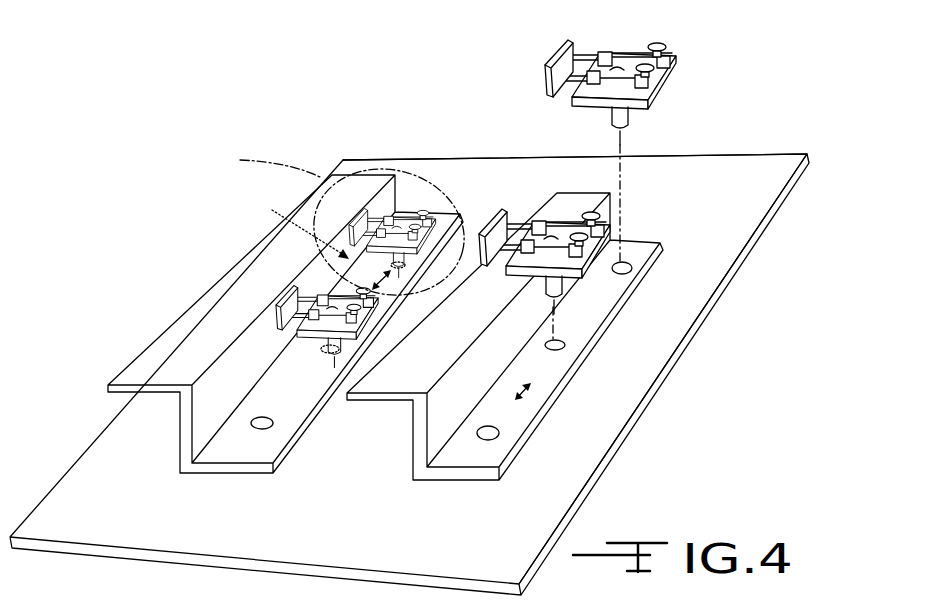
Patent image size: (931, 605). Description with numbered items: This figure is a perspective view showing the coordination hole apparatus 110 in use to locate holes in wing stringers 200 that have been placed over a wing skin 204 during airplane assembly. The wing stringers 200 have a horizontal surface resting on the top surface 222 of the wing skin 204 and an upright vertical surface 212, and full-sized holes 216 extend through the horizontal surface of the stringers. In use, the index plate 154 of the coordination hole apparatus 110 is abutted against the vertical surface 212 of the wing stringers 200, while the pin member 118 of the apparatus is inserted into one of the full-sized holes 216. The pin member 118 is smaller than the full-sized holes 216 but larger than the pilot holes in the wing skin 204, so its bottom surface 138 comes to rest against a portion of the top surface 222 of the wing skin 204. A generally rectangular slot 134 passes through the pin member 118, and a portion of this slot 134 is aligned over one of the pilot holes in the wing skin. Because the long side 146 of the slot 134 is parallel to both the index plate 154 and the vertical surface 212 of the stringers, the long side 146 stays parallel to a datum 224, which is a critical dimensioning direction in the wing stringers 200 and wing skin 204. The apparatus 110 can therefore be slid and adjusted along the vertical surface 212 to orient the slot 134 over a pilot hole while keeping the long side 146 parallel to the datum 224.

The coordination hole apparatus 110 is at (692, 72).
The pin member 118 is at (338, 340).
The generally rectangular slot 134 is at (624, 70).
The bottom surface of the pin member 138 is at (630, 130).
The long side of the slot 146 is at (290, 228).
The index plate 154 is at (556, 57).
The wing stringers 200 is at (409, 298).
The wing skin 204 is at (647, 402).
The vertical surface of the wing stringers 212 is at (382, 203).
The full-sized holes 216 is at (326, 347).
The top surface of the wing skin 222 is at (673, 292).
The datum 224 is at (416, 286).